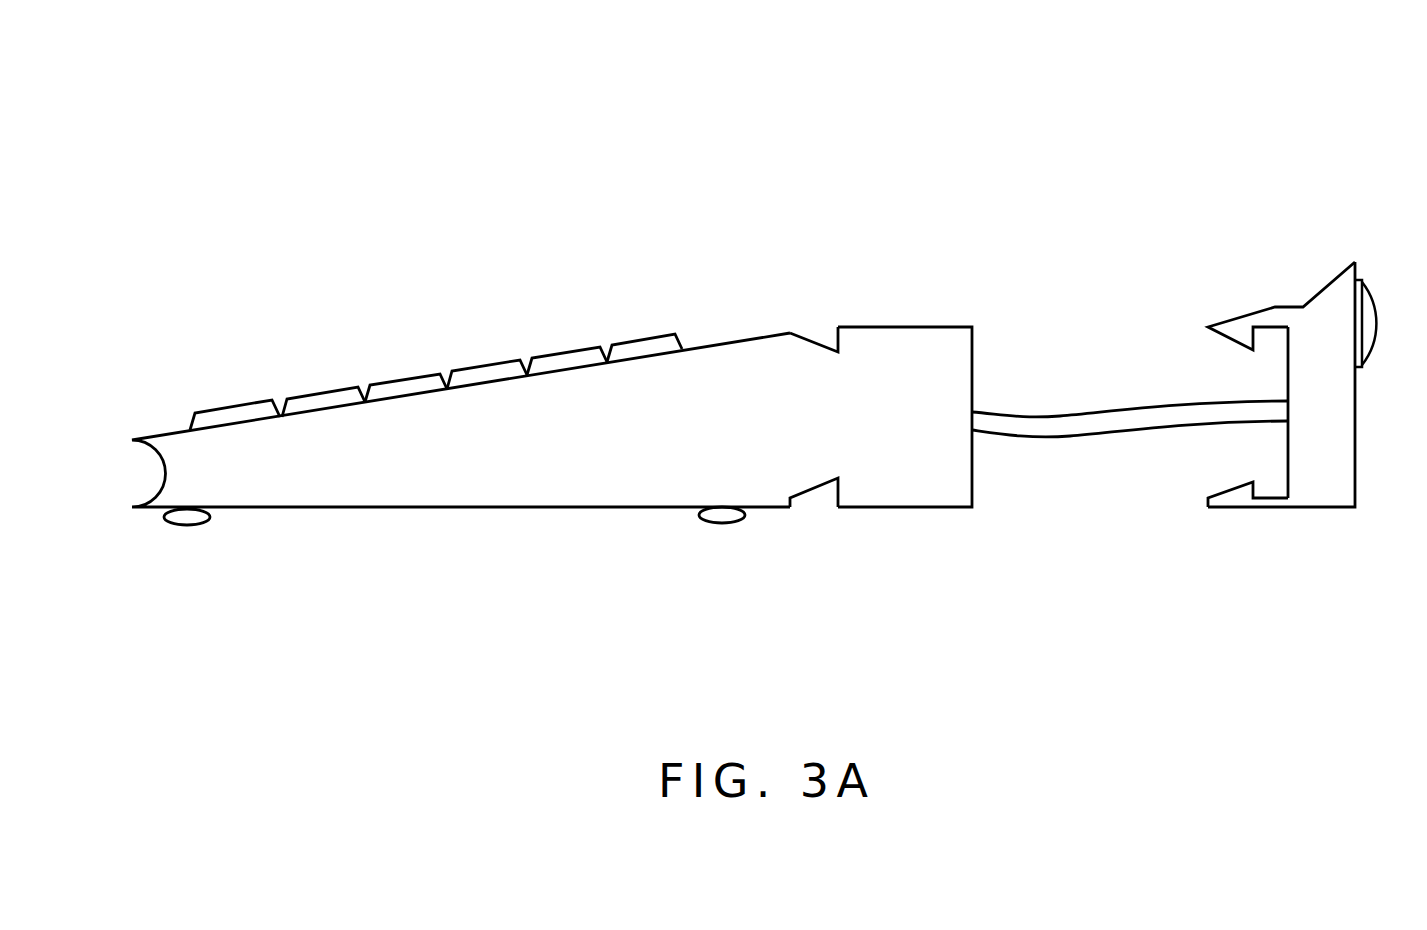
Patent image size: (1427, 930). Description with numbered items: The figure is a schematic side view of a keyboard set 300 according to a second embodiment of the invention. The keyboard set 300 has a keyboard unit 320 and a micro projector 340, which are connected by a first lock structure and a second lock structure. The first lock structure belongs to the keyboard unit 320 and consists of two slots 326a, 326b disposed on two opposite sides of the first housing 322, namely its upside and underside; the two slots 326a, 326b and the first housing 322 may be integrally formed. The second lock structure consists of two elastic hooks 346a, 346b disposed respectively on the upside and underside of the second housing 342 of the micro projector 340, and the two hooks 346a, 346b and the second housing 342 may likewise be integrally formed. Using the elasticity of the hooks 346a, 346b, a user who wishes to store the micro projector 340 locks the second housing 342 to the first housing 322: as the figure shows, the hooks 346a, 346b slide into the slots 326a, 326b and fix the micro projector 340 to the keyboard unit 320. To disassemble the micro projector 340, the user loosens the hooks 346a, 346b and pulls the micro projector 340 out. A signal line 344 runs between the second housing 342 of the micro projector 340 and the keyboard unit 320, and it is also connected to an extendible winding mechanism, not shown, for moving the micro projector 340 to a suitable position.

The keyboard set 300 is at (1017, 124).
The keyboard unit 320 is at (550, 392).
The first housing 322 is at (715, 342).
The slot 326a is at (818, 330).
The slot 326b is at (821, 504).
The micro projector 340 is at (1366, 284).
The second housing 342 is at (1330, 490).
The signal line 344 is at (1012, 423).
The elastic hook 346a is at (1233, 332).
The elastic hook 346b is at (1235, 502).